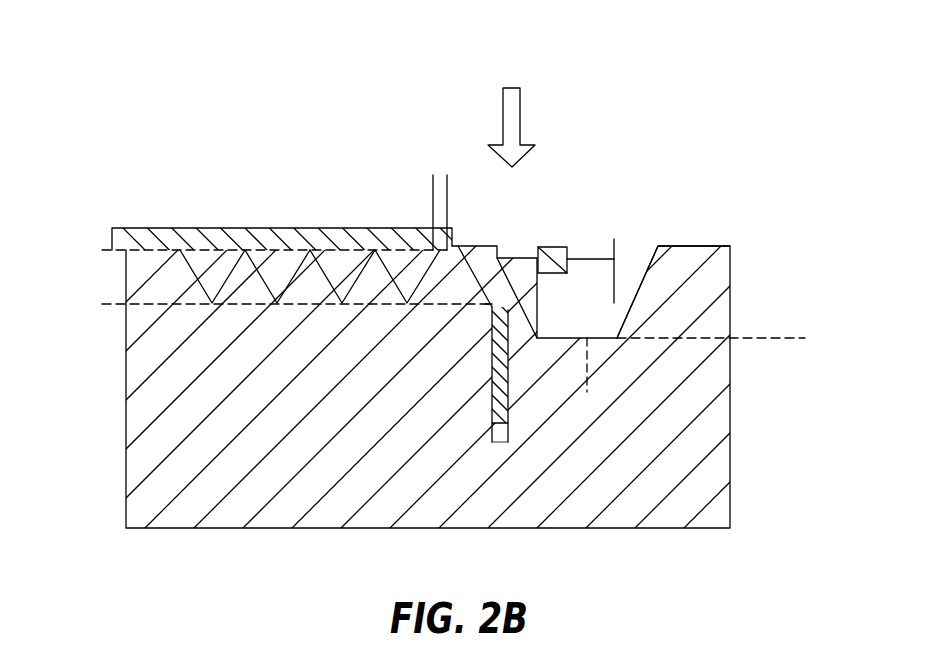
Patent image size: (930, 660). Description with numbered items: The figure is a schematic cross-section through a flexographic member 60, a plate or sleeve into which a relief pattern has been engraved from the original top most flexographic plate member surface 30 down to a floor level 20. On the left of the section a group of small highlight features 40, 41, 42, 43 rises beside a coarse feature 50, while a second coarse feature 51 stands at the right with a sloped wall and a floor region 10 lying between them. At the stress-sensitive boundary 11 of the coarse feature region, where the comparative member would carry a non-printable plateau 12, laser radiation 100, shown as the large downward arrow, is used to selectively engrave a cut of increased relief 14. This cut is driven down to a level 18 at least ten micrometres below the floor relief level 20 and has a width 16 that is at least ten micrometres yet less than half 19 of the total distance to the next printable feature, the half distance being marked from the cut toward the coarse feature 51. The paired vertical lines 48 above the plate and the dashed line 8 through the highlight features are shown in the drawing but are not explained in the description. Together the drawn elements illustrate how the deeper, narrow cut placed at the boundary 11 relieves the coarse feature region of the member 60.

The laser radiation 100 is at (505, 88).
The guide lines 48 is at (442, 175).
The coarse feature 50 is at (150, 230).
The highlight feature 43 is at (230, 235).
The highlight feature 42 is at (298, 235).
The highlight feature 41 is at (368, 235).
The highlight feature 40 is at (436, 245).
The original top most flexographic plate member surface 30 is at (265, 250).
The depth reference line 8 is at (289, 304).
The boundary 11 is at (484, 292).
The floor region 10 is at (556, 249).
The coarse feature 51 is at (692, 238).
The cut of increased relief 14 is at (510, 327).
The non-printable plateau 12 is at (479, 310).
The level 18 is at (510, 421).
The width of the cut 16 is at (497, 445).
The half the total distance to the next printable feature 19 is at (585, 378).
The floor level 20 is at (727, 340).
The flexographic member 60 is at (112, 443).